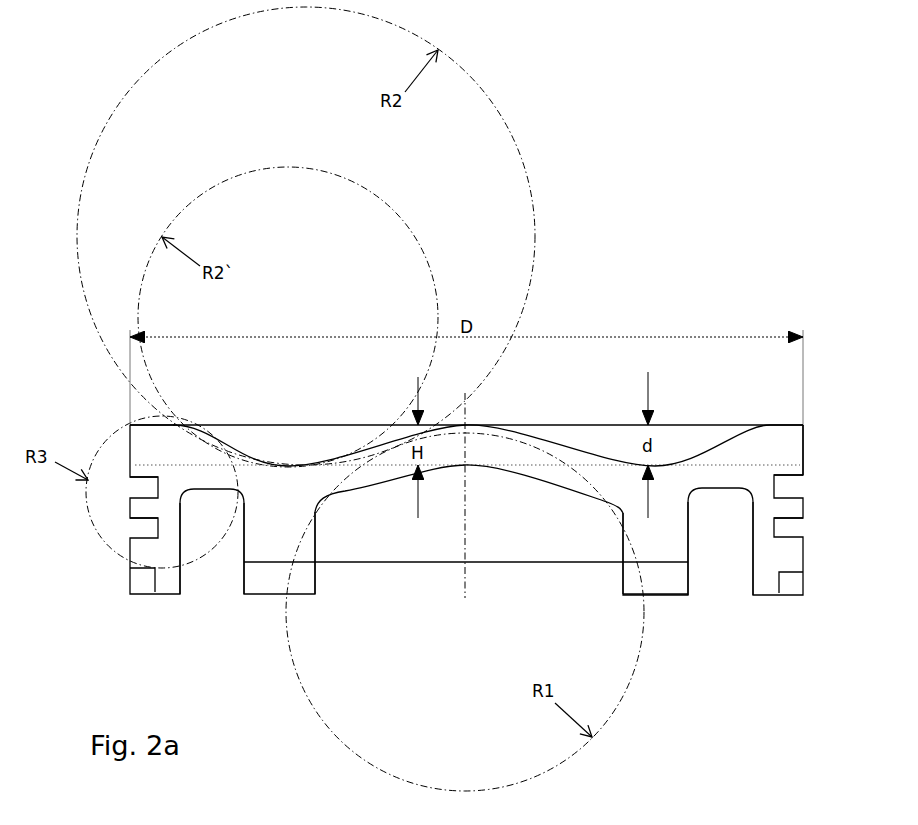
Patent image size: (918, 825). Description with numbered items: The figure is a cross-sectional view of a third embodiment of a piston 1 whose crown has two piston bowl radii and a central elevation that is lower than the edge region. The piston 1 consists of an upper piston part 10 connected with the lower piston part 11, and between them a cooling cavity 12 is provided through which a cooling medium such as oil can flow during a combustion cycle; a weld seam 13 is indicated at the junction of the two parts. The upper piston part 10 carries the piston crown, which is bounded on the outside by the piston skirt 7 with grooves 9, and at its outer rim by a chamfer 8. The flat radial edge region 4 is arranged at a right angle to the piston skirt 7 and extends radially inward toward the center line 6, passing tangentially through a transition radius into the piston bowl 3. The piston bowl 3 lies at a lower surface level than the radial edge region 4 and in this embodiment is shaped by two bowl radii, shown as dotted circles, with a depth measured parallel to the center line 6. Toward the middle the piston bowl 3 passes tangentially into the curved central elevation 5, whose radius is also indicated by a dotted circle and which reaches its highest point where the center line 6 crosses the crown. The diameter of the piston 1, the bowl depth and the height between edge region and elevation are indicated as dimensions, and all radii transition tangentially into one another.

The piston 1 is at (95, 357).
The piston bowl 3 is at (307, 445).
The radial edge region 4 is at (783, 425).
The central elevation 5 is at (522, 430).
The center line 6 is at (465, 583).
The piston skirt 7 is at (817, 447).
The chamfer 8 is at (130, 425).
The groove 9 is at (135, 583).
The upper piston part 10 is at (755, 463).
The lower piston part 11 is at (670, 585).
The cooling cavity 12 is at (737, 557).
The weld seam 13 is at (628, 565).